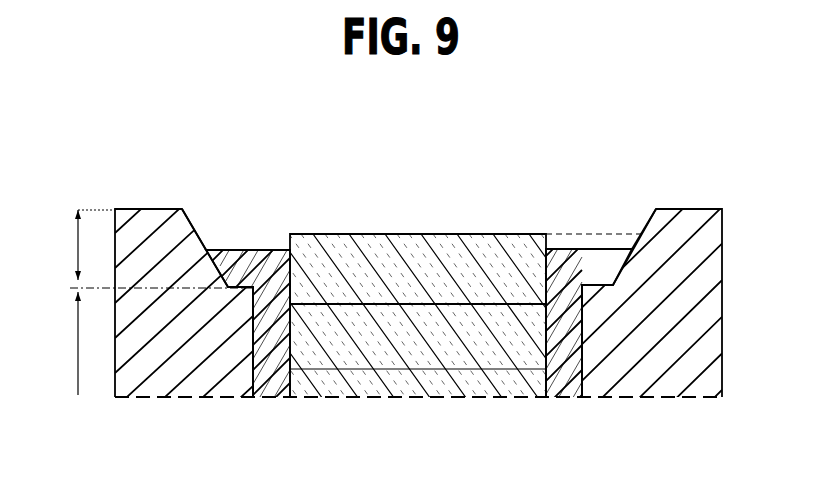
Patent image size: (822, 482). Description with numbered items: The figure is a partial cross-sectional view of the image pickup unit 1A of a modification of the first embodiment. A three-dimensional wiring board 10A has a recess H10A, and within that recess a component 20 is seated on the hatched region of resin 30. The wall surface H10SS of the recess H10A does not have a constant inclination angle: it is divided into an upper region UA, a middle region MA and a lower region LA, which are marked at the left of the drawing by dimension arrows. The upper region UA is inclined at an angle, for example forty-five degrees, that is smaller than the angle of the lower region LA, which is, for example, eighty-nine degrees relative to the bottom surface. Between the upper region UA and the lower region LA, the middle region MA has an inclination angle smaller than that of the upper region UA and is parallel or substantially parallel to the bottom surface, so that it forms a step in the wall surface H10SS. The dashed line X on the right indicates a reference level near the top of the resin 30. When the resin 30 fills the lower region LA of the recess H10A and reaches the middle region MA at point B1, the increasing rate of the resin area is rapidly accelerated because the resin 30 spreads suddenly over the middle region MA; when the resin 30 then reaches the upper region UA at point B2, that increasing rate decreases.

The image pickup unit 1A is at (398, 241).
The three-dimensional wiring board 10A is at (698, 207).
The chip 20 is at (482, 234).
The resin 30 is at (260, 249).
The recess H10A is at (362, 196).
The wall surface H10SS is at (258, 335).
The reference line X is at (643, 236).
The point B1 is at (585, 289).
The point B2 is at (614, 286).
The upper region UA is at (74, 245).
The middle region MA is at (219, 188).
The lower region LA is at (58, 343).